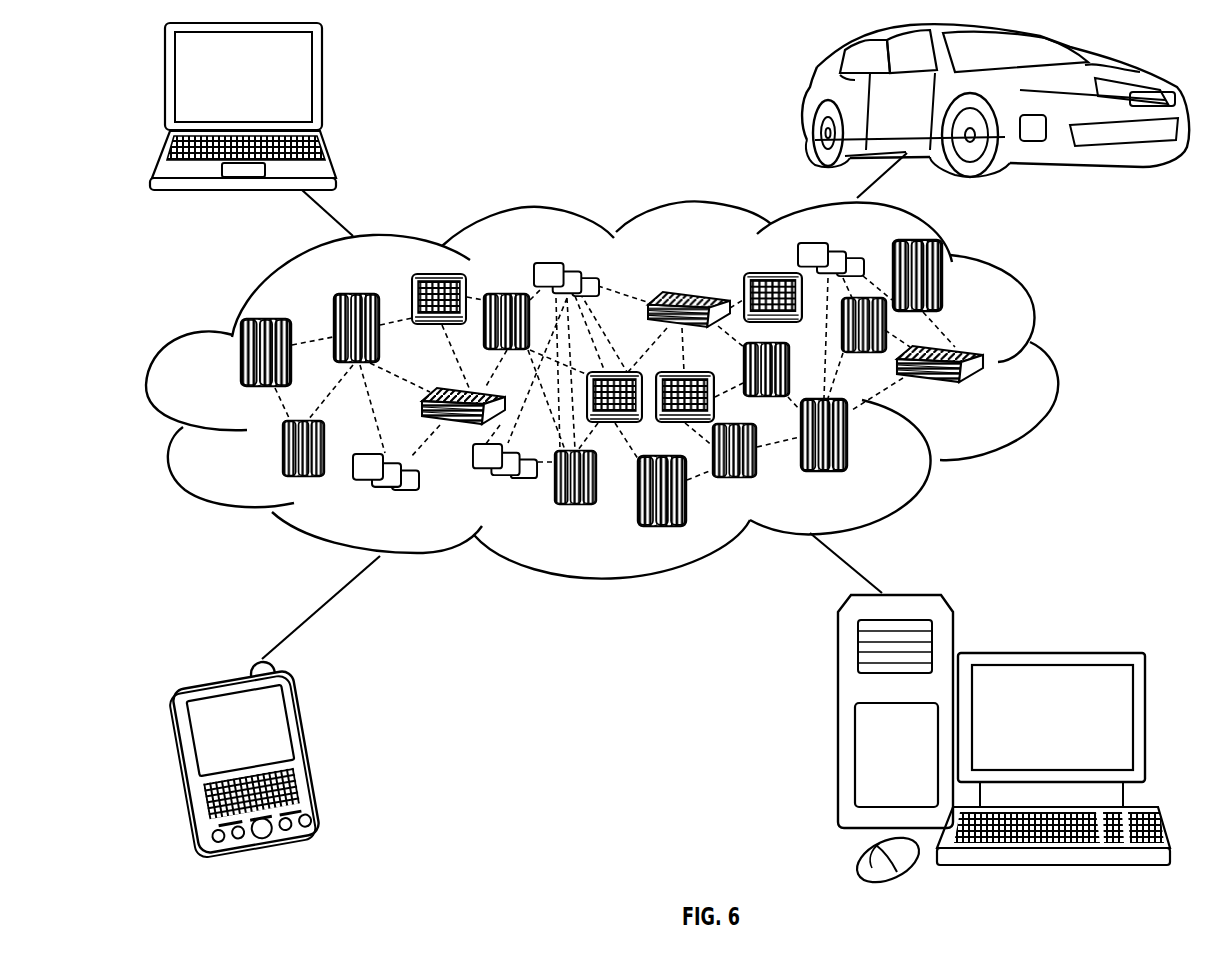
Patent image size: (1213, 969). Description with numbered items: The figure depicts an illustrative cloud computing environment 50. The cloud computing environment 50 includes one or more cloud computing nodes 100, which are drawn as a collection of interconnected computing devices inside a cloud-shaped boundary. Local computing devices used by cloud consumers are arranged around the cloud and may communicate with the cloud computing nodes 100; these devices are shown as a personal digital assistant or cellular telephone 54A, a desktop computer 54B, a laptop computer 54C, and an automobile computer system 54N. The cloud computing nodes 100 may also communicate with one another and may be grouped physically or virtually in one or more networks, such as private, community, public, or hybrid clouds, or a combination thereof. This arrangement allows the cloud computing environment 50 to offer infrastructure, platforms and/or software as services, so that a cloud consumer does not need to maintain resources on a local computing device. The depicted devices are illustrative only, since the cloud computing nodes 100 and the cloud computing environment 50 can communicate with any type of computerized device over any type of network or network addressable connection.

The cloud computing environment 50 is at (1050, 358).
The cloud computing nodes 100 is at (992, 392).
The personal digital assistant (PDA) or cellular telephone 54A is at (308, 752).
The desktop computer 54B is at (1050, 652).
The laptop computer 54C is at (323, 85).
The automobile computer system 54N is at (808, 100).